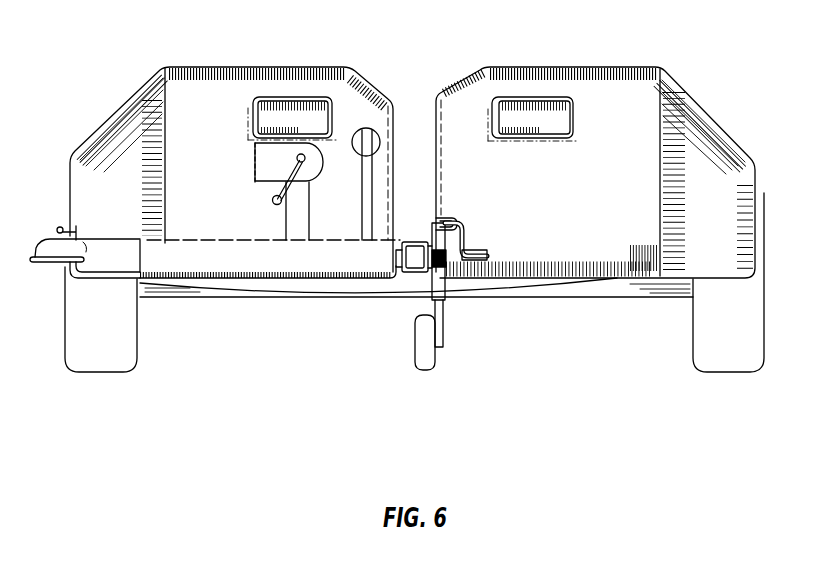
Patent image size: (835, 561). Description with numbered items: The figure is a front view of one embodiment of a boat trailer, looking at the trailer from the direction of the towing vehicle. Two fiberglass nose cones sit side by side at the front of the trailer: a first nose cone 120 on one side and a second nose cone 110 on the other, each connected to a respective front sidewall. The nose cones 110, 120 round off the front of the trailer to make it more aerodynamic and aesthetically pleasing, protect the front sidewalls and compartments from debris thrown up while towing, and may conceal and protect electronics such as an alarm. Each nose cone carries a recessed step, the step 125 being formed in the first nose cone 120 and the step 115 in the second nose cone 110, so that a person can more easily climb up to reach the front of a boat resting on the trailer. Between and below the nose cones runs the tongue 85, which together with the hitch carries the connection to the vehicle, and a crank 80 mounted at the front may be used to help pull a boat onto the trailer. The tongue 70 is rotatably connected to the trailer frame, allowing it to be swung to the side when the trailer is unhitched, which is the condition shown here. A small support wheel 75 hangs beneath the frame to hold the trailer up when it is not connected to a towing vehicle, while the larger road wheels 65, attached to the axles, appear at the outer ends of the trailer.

The wheels 65 is at (82, 333).
The tongue 70 is at (48, 263).
The wheel 75 is at (443, 300).
The crank 80 is at (317, 150).
The tongue 85 is at (237, 257).
The second nose cone 110 is at (625, 110).
The recessed step 115 is at (538, 122).
The first nose cone 120 is at (208, 107).
The recessed step 125 is at (300, 118).